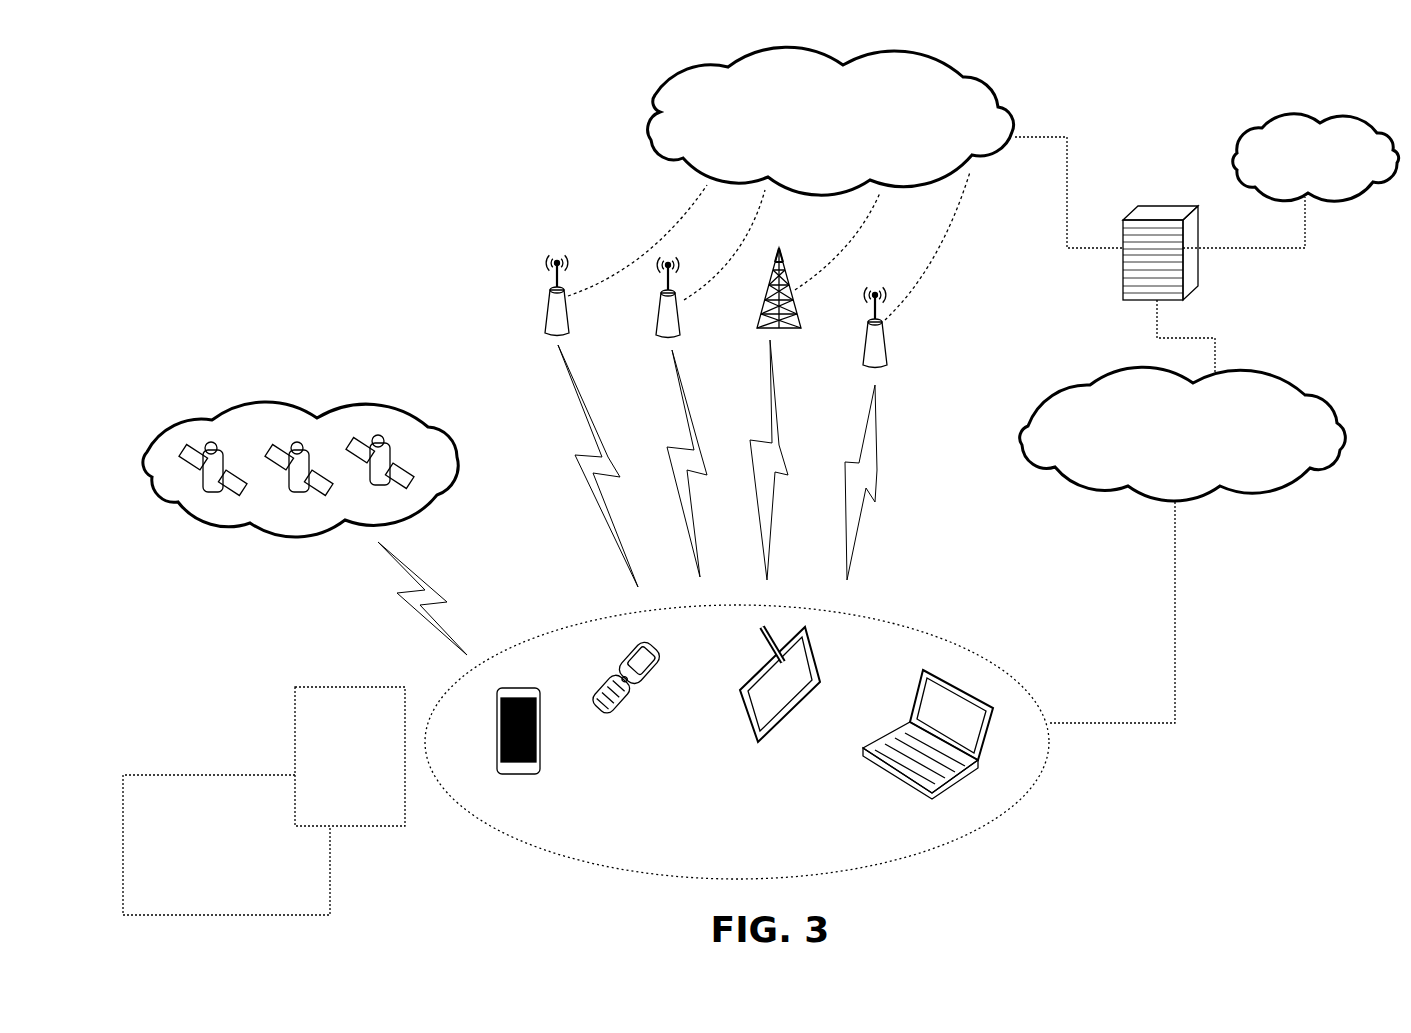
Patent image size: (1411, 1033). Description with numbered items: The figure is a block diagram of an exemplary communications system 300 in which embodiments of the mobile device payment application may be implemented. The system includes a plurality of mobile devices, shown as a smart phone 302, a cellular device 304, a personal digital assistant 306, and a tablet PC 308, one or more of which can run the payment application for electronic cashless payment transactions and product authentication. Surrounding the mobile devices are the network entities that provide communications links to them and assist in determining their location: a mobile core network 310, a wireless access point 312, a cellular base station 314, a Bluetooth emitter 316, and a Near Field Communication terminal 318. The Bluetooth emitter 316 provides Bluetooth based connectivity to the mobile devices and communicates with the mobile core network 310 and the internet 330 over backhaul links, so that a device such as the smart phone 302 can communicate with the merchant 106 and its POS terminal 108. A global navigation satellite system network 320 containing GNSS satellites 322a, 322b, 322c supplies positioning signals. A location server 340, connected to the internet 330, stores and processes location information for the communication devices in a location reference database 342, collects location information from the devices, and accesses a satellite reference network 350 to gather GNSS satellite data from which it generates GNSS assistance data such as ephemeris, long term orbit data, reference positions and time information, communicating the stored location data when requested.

The communications system 300 is at (1145, 76).
The mobile core network 310 is at (845, 183).
The wireless access point 312 is at (541, 300).
The cellular base station 314 is at (757, 288).
The Bluetooth emitter 316 is at (860, 331).
The Near Field Communication terminal 318 is at (655, 306).
The global navigation satellite system network 320 is at (276, 396).
The GNSS satellite 322a is at (196, 490).
The GNSS satellite 322b is at (283, 490).
The GNSS satellite 322c is at (363, 488).
The internet 330 is at (1183, 545).
The location server 340 is at (1210, 276).
The location reference database 342 is at (1145, 258).
The satellite reference network 350 is at (1316, 157).
The smart phone 302 is at (533, 744).
The cellular device 304 is at (626, 696).
The personal digital assistant 306 is at (775, 700).
The tablet PC 308 is at (927, 739).
The merchant 106 is at (226, 845).
The POS terminal 108 is at (350, 756).